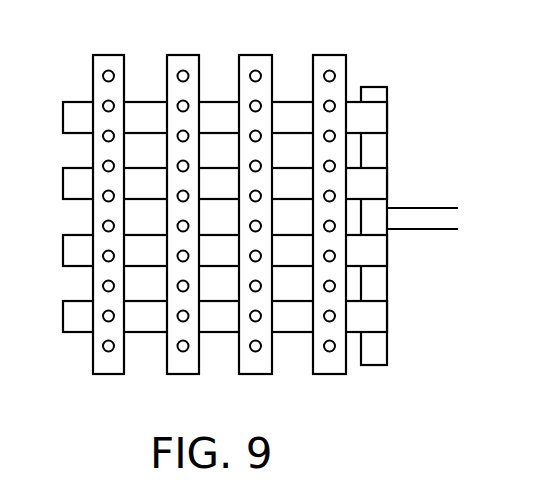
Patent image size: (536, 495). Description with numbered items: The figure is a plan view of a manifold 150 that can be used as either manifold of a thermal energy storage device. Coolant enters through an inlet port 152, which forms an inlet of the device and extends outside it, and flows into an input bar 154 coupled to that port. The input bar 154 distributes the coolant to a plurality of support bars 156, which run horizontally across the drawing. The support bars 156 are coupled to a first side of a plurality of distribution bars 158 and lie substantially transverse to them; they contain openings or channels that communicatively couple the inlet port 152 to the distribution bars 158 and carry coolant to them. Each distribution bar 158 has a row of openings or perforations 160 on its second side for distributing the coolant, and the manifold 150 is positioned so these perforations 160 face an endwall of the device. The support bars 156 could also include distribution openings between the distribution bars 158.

The manifold 150 is at (369, 46).
The inlet port 152 is at (430, 219).
The input bar 154 is at (374, 87).
The support bars 156 is at (141, 101).
The distribution bars 158 is at (255, 55).
The openings or perforations 160 is at (333, 350).